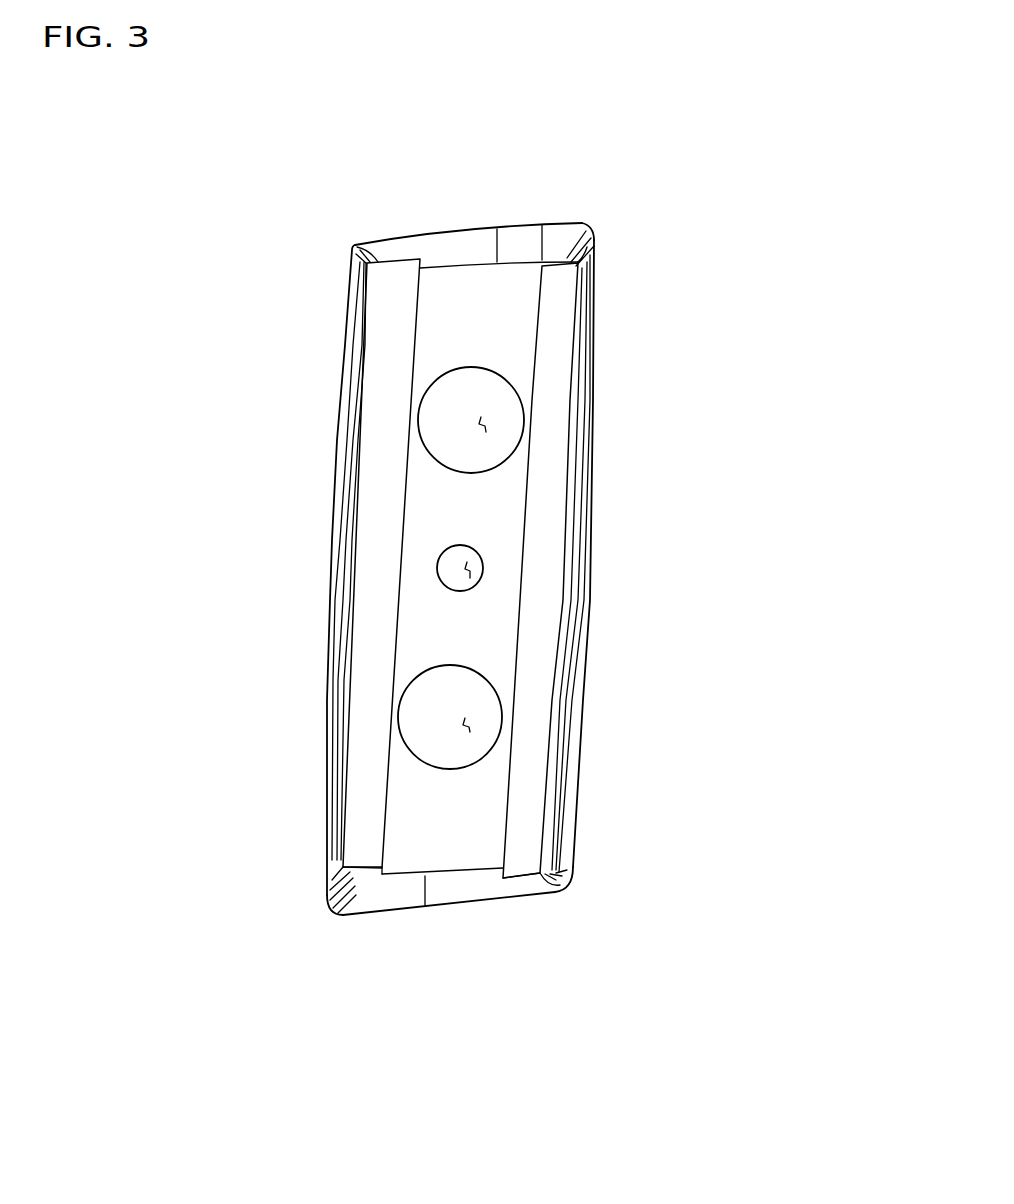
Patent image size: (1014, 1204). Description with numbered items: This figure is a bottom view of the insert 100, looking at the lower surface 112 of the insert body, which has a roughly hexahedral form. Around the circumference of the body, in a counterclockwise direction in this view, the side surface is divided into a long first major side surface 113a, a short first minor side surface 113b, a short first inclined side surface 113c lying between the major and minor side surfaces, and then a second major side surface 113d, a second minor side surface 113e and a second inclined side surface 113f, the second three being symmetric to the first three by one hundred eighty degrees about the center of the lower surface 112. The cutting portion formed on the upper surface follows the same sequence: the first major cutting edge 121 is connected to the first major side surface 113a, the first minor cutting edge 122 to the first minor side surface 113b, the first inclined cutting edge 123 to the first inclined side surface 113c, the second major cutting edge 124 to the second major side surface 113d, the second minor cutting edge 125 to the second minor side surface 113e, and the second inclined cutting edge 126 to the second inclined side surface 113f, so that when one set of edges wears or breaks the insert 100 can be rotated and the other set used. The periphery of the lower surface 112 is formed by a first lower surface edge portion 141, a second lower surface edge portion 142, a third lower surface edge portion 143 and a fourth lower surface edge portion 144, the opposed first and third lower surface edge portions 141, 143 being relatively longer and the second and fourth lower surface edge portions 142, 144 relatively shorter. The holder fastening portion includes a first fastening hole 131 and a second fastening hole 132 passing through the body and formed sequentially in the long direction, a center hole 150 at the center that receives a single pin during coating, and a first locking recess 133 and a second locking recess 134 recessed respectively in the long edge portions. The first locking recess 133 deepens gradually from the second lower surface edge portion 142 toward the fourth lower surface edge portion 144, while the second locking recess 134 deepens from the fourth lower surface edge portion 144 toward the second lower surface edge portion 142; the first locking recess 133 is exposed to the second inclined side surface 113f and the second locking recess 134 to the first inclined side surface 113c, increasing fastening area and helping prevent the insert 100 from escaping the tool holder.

The insert 100 is at (644, 183).
The lower surface 112 is at (497, 637).
The first major side surface 113a is at (585, 485).
The first minor side surface 113b is at (545, 243).
The first inclined side surface 113c is at (423, 250).
The second major side surface 113d is at (338, 584).
The second minor side surface 113e is at (372, 900).
The second inclined side surface 113f is at (515, 890).
The first major cutting edge 121 is at (593, 505).
The first minor cutting edge 122 is at (562, 222).
The first inclined cutting edge 123 is at (450, 238).
The second major cutting edge 124 is at (332, 535).
The second minor cutting edge 125 is at (347, 910).
The second inclined cutting edge 126 is at (547, 900).
The first fastening hole 131 is at (487, 417).
The second fastening hole 132 is at (470, 720).
The first locking recess 133 is at (553, 447).
The second locking recess 134 is at (382, 463).
The first lower surface edge portion 141 is at (567, 540).
The second lower surface edge portion 142 is at (478, 263).
The third lower surface edge portion 143 is at (355, 632).
The fourth lower surface edge portion 144 is at (450, 876).
The center hole 150 is at (483, 562).